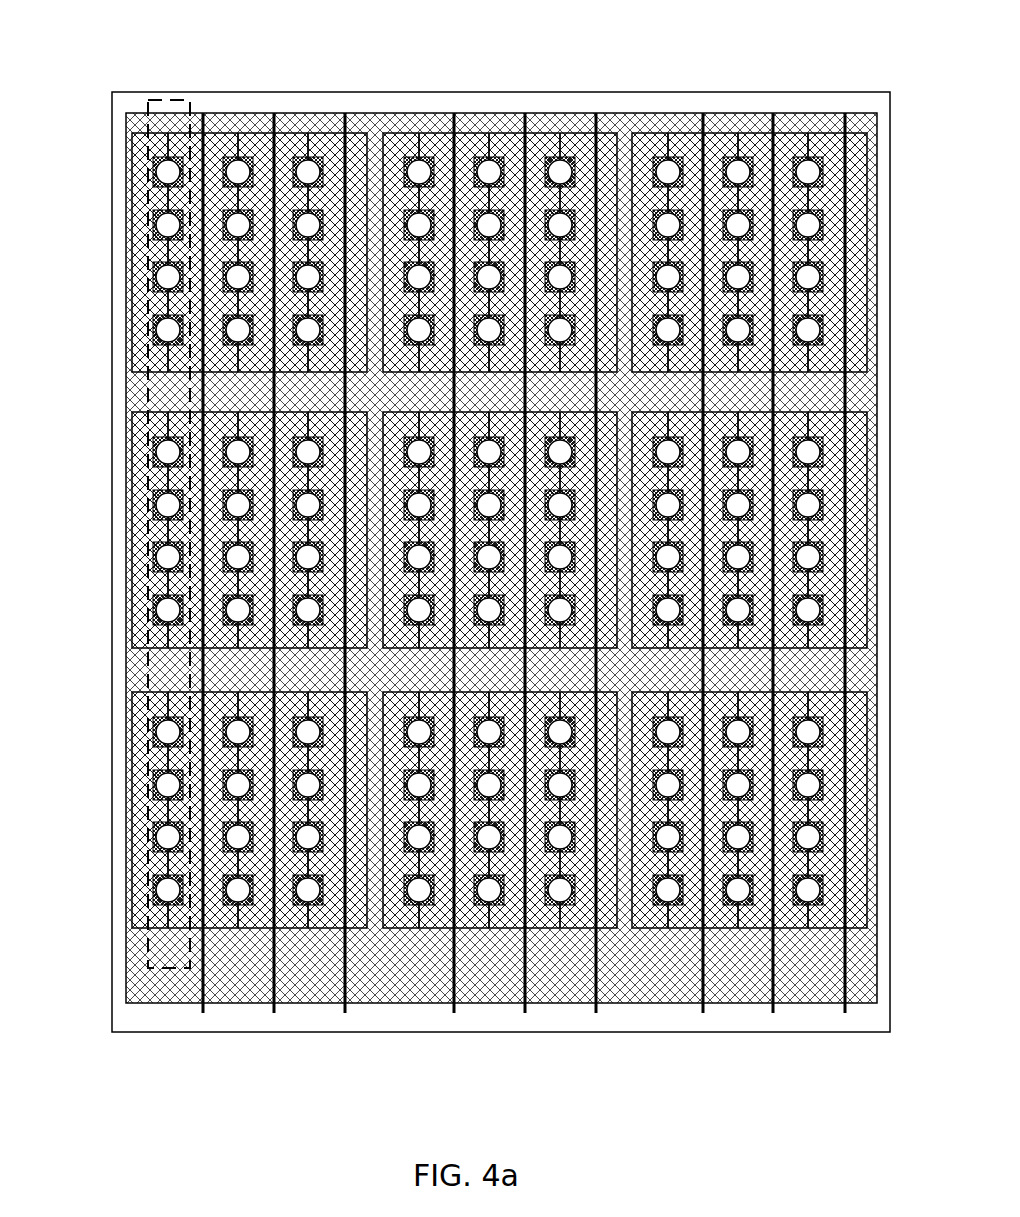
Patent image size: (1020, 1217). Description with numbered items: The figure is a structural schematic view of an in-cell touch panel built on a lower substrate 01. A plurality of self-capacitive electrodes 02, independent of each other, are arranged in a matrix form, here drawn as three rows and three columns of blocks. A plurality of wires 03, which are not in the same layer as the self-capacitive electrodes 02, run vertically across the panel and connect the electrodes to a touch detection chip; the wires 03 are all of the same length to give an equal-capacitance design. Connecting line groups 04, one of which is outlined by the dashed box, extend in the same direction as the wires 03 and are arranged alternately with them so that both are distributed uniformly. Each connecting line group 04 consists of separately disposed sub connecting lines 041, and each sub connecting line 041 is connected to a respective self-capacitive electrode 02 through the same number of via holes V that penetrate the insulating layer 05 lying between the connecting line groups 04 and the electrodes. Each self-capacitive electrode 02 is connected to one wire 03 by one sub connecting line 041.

The lower substrate 01 is at (550, 92).
The self-capacitive electrode 02 is at (253, 132).
The wire 03 is at (348, 977).
The connecting line group 04 is at (167, 98).
The sub connecting line 041 is at (167, 247).
The insulating layer 05 is at (783, 112).
The via hole V is at (168, 330).